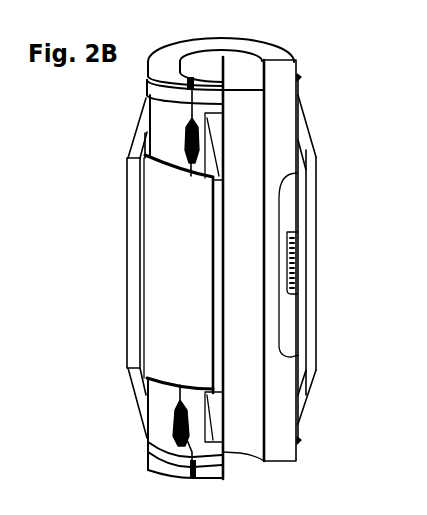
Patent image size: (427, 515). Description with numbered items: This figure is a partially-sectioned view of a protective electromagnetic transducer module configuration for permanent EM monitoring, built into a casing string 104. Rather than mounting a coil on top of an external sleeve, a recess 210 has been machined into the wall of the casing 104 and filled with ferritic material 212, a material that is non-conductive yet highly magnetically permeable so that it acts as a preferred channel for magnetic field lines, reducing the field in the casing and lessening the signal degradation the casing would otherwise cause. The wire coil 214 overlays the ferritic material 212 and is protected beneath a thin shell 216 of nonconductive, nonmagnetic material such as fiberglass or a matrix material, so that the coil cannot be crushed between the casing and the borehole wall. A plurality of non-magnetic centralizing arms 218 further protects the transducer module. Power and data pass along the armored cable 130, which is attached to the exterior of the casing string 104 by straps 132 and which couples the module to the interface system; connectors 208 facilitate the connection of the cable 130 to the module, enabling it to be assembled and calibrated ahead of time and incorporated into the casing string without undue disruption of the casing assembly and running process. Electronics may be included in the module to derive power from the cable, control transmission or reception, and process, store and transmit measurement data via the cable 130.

The casing string 104 is at (160, 422).
The armored cable 130 is at (189, 78).
The straps 132 is at (299, 79).
The connectors 208 is at (188, 140).
The recess 210 is at (278, 208).
The ferritic material 212 is at (288, 218).
The wire coil 214 is at (298, 267).
The thin shell 216 is at (143, 155).
The non-magnetic centralizing arms 218 is at (317, 150).